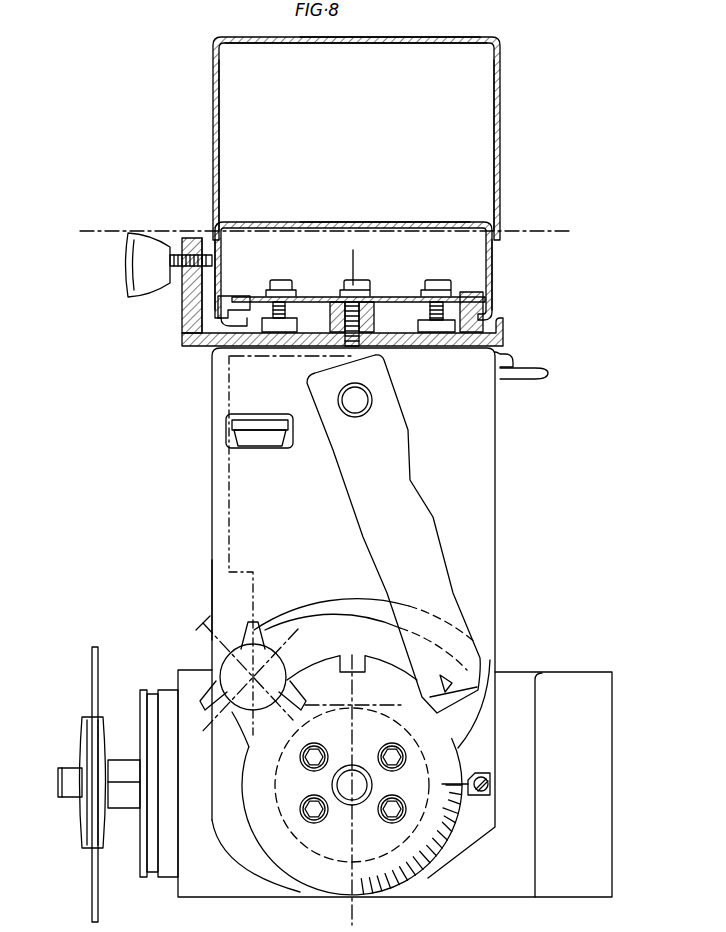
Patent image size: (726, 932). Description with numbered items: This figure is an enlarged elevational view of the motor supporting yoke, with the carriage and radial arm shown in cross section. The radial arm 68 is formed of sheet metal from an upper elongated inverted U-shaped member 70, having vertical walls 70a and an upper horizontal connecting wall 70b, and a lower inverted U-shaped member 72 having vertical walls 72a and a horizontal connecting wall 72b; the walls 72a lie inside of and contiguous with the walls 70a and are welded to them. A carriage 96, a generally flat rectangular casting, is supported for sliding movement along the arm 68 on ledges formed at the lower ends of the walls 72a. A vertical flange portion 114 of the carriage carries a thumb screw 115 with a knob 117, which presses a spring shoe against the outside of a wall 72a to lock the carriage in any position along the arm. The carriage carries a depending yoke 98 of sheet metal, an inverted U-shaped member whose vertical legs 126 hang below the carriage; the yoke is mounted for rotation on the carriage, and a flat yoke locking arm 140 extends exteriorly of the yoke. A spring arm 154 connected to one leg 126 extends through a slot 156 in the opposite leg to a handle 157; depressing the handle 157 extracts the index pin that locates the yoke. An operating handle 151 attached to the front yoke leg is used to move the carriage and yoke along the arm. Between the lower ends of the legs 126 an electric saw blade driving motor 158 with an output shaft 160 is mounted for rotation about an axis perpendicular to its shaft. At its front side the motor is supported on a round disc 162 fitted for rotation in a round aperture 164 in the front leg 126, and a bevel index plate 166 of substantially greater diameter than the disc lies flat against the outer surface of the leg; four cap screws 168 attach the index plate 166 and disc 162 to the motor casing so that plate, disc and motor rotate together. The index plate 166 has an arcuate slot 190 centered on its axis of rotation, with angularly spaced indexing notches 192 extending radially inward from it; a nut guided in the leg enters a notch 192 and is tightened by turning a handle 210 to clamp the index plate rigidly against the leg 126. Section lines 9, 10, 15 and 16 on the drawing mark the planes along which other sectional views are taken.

The section line 9- 9 is at (348, 258).
The section line 10- 10 is at (97, 226).
The section line 15- 15 is at (210, 640).
The section line 16- 16 is at (287, 650).
The radial arm 68 is at (503, 110).
The upper elongated inverted U-shaped member 70 is at (291, 47).
The vertical walls 70a is at (220, 130).
The upper horizontal connecting wall 70b is at (444, 48).
The lower inverted U-shaped member 72 is at (272, 222).
The vertical walls 72a is at (223, 250).
The horizontal connecting wall 72b is at (388, 222).
The carriage 96 is at (506, 334).
The yoke 98 is at (499, 422).
The vertical flange portion 114 is at (182, 338).
The thumb screw 115 is at (179, 272).
The knob 117 is at (128, 288).
The vertical legs 126 is at (212, 595).
The yoke locking arm 140 is at (522, 368).
The operating handle 151 is at (399, 418).
The arm 154 is at (255, 444).
The slot 156 is at (280, 448).
The handle 157 is at (272, 430).
The electric saw blade driving motor 158 is at (465, 897).
The output shaft 160 is at (73, 798).
The round disc 162 is at (426, 740).
The round aperture 164 is at (424, 760).
The bevel index plate 166 is at (256, 842).
The cap screws 168 is at (318, 823).
The arcuate slot 190 is at (356, 630).
The indexing notches 192 is at (360, 672).
The handle 210 is at (300, 620).